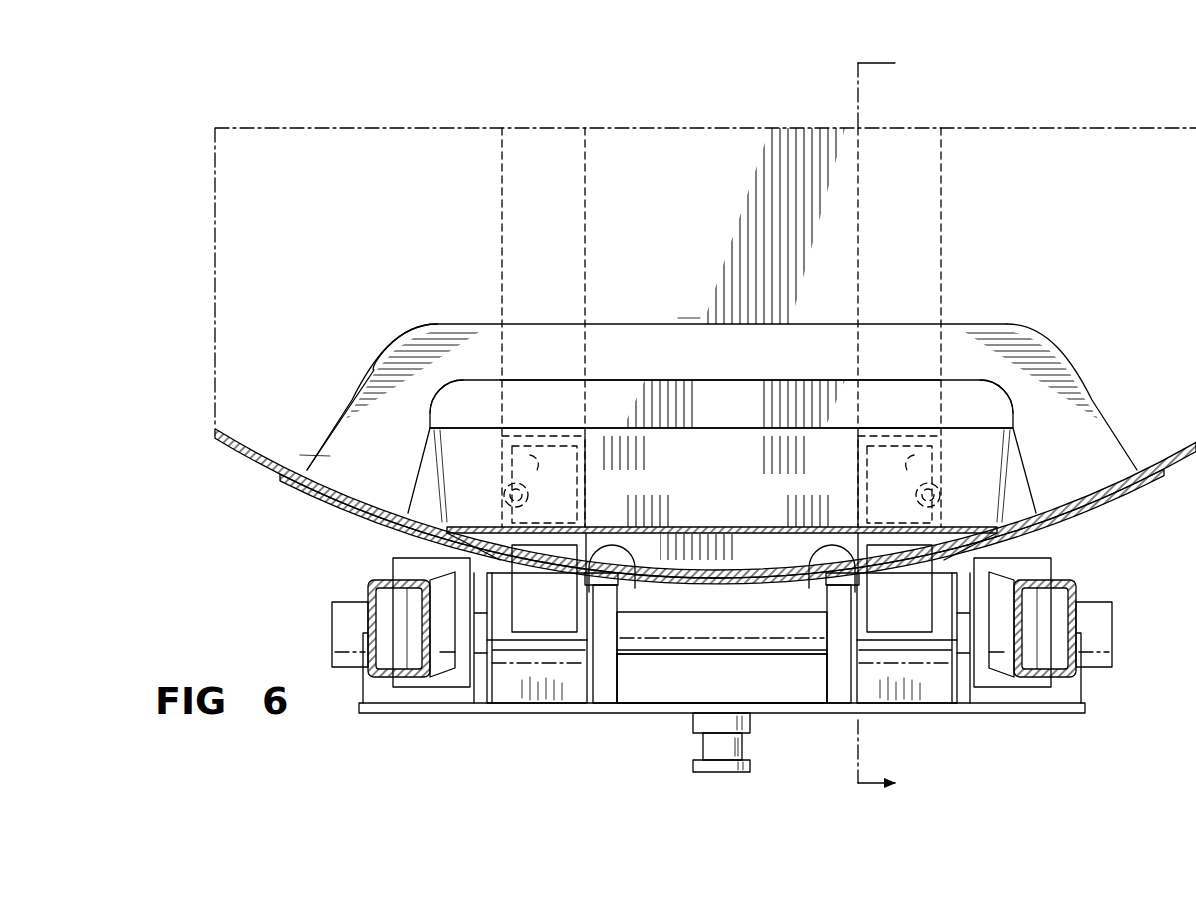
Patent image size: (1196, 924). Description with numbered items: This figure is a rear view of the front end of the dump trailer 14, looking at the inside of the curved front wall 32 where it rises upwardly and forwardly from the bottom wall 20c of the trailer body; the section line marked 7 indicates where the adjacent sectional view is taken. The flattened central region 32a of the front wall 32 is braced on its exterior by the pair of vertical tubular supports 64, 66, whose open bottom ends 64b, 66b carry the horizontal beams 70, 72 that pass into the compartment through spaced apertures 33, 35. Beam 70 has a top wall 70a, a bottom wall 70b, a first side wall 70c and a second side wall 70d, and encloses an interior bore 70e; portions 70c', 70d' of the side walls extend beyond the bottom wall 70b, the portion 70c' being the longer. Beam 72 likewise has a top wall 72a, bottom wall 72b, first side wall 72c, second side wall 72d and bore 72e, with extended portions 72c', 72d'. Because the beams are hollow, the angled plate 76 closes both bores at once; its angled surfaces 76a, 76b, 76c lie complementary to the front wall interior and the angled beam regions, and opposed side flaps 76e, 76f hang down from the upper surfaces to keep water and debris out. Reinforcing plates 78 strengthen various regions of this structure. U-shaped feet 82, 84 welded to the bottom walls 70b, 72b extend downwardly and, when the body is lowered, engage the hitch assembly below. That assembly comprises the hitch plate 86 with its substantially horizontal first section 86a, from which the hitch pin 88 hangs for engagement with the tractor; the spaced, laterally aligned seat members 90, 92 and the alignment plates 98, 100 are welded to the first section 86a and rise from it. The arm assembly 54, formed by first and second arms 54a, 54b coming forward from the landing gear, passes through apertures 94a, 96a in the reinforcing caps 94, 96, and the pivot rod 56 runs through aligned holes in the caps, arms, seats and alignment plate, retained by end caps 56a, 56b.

The dump trailer 14 is at (241, 463).
The bottom wall 20c is at (732, 578).
The front wall 32 is at (333, 170).
The central region 32a is at (727, 184).
The aperture 33 is at (508, 505).
The aperture 35 is at (936, 505).
The arm assembly 54 is at (336, 624).
The first arm 54a is at (366, 588).
The second arm 54b is at (1078, 583).
The pivot rod 56 is at (693, 655).
The end cap 56a is at (343, 620).
The end cap 56b is at (1101, 620).
The support 64 is at (503, 192).
The bottom end 64b is at (538, 410).
The support 66 is at (943, 192).
The bottom end 66b is at (907, 410).
The beam 70 is at (517, 454).
The top wall 70a is at (525, 432).
The bottom wall 70b is at (541, 541).
The first side wall 70c is at (625, 481).
The portion of first side wall 70c' is at (645, 578).
The second side wall 70d is at (484, 487).
The portion of second side wall 70d' is at (416, 544).
The interior bore 70e is at (522, 460).
The beam 72 is at (929, 454).
The top wall 72a is at (919, 432).
The bottom wall 72b is at (898, 541).
The first side wall 72c is at (823, 481).
The portion of first side wall 72c' is at (800, 578).
The second side wall 72d is at (961, 487).
The portion of second side wall 72d' is at (1028, 544).
The interior bore 72e is at (922, 460).
The angled plate 76 is at (622, 385).
The angled surface 76a is at (768, 400).
The angled surface 76b is at (730, 456).
The angled surface 76c is at (697, 527).
The side flap 76e is at (1030, 500).
The side flap 76f is at (415, 502).
The reinforcing plates 78 is at (677, 337).
The U-shaped foot 82 is at (547, 617).
The U-shaped foot 84 is at (897, 617).
The hitch plate 86 is at (695, 707).
The first section 86a is at (405, 713).
The hitch pin 88 is at (702, 747).
The seat member 90 is at (518, 647).
The seat member 92 is at (925, 647).
The reinforcing cap 94 is at (395, 655).
The aperture 94a is at (442, 652).
The reinforcing cap 96 is at (1047, 655).
The aperture 96a is at (1002, 652).
The alignment plate 98 is at (605, 697).
The alignment plate 100 is at (838, 692).
The section line 7 is at (892, 424).